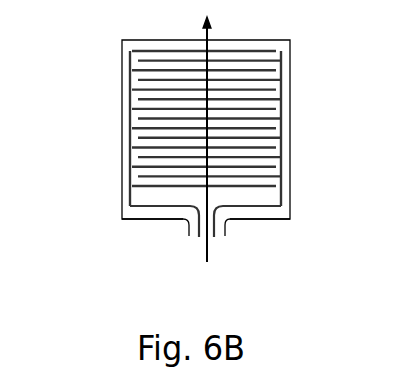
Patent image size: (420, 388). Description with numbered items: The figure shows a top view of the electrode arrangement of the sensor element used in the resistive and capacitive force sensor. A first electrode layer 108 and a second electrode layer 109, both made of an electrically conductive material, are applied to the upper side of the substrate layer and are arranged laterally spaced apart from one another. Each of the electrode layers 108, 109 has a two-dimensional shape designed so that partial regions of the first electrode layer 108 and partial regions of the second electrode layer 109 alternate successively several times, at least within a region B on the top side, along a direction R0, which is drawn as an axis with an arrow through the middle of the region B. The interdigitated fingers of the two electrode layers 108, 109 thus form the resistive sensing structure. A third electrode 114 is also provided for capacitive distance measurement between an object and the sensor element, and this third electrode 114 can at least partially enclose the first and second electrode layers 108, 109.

The region B is at (291, 123).
The first electrode layer ES1 108 is at (135, 203).
The second electrode layer ES2 109 is at (278, 206).
The electrode ES3 114 is at (227, 221).
The direction R0 is at (206, 154).